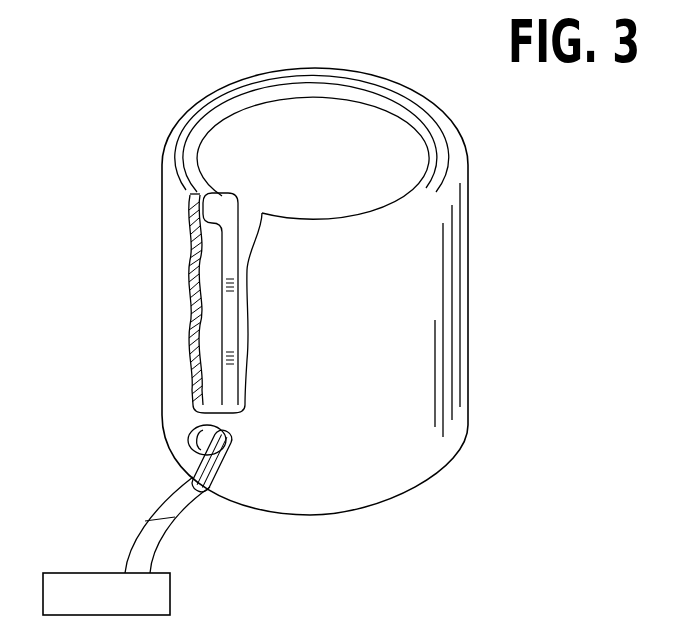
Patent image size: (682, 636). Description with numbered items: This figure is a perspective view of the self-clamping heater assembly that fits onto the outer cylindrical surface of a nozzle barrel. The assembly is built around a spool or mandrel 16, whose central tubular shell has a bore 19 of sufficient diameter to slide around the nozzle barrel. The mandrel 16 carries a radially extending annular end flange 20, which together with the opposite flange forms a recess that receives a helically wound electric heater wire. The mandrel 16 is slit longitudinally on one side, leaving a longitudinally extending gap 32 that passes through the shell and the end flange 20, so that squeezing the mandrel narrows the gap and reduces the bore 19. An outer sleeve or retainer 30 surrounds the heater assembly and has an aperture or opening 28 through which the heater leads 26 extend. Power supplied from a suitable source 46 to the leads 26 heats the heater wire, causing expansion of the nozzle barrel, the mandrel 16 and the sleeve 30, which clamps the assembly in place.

The mandrel 16 is at (420, 152).
The bore 19 is at (332, 117).
The end flange 20 is at (222, 197).
The leads 26 is at (175, 517).
The opening 28 is at (232, 442).
The outer sleeve 30 is at (418, 318).
The longitudinally extending gap 32 is at (232, 328).
The power source 46 is at (85, 573).